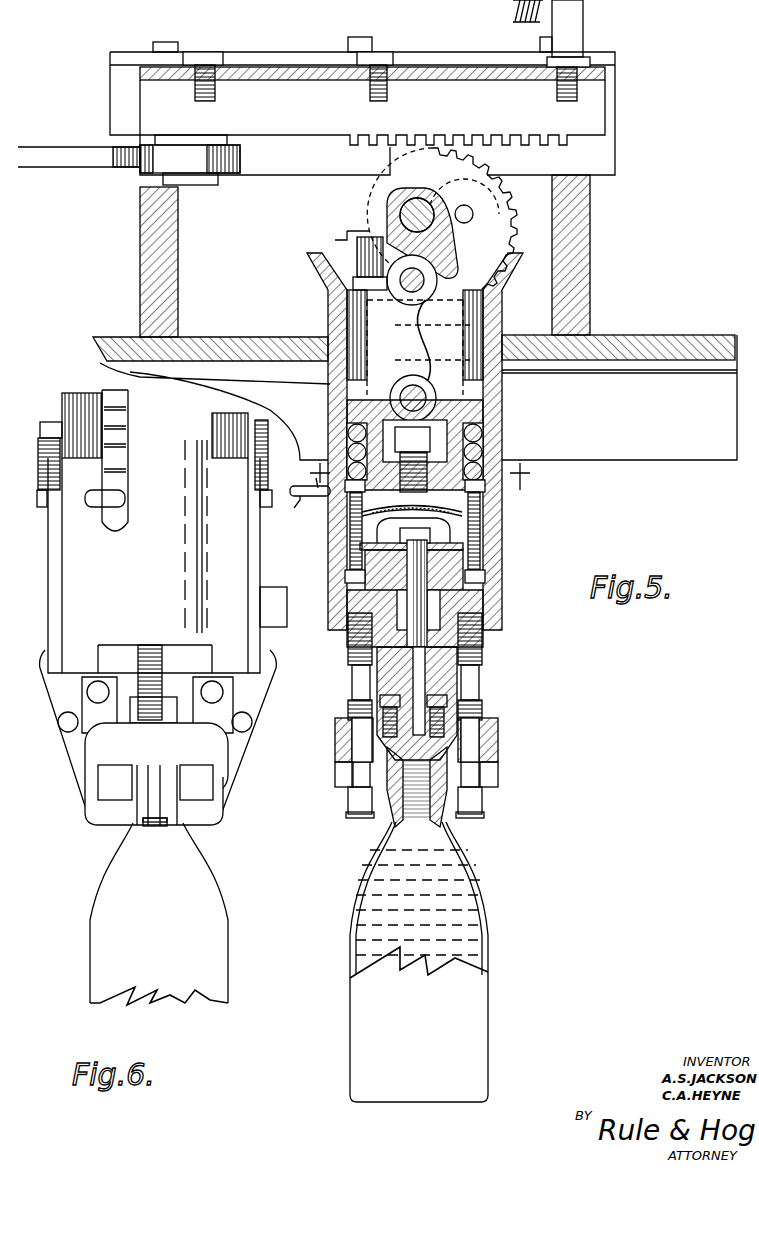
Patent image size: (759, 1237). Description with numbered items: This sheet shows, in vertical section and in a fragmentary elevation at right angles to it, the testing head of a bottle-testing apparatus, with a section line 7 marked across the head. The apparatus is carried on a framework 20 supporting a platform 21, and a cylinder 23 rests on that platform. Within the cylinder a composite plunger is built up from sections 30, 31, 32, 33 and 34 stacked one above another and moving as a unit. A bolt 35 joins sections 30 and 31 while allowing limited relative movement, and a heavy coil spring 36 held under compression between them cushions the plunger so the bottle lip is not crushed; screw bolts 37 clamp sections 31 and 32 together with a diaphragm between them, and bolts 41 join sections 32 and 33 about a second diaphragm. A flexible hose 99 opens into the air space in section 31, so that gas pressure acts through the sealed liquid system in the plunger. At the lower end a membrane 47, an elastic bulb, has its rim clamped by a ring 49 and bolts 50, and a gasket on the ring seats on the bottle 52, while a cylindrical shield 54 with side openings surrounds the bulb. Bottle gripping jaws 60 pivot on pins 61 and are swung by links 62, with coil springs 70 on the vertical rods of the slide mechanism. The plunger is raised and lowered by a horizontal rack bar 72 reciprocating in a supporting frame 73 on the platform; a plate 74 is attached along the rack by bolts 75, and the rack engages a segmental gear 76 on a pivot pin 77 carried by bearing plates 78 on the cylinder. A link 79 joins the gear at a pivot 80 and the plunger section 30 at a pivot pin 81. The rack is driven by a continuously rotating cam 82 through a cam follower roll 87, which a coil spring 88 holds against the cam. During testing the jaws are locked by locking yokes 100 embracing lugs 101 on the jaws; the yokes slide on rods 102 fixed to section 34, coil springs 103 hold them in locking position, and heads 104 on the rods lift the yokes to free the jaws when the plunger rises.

In FIG. 5, the section line 7 is at (422, 476).
In FIG. 5, the framework 20 is at (717, 462).
In FIG. 5, the platform 21 is at (700, 332).
In FIG. 5, the cylinder 23 is at (332, 410).
In FIG. 5, the plunger section 30 is at (498, 412).
In FIG. 5, the plunger section 31 is at (486, 508).
In FIG. 5, the plunger section 32 is at (490, 530).
In FIG. 5, the plunger section 33 is at (482, 555).
In FIG. 5, the plunger section 34 is at (490, 600).
In FIG. 5, the bolt 35 is at (412, 459).
In FIG. 5, the coil spring 36 is at (482, 434).
In FIG. 5, the screw bolts 37 is at (345, 526).
In FIG. 5, the bolts 41 is at (350, 560).
In FIG. 5, the membrane 47 is at (445, 825).
In FIG. 5, the ring 49 is at (380, 760).
In FIG. 5, the bolts 50 is at (450, 700).
In FIG. 5, the bottle 52 is at (488, 918).
In FIG. 6, the bottle 52 is at (205, 900).
In FIG. 5, the cylindrical shield 54 is at (392, 826).
In FIG. 6, the bottle gripping jaws 60 is at (215, 800).
In FIG. 6, the pins 61 is at (215, 690).
In FIG. 6, the links 62 is at (228, 700).
In FIG. 6, the coil springs 70 is at (250, 455).
In FIG. 5, the rack bar 72 is at (372, 112).
In FIG. 5, the supporting frame 73 is at (580, 232).
In FIG. 5, the plate 74 is at (300, 42).
In FIG. 5, the bolts 75 is at (385, 58).
In FIG. 5, the segmental gear 76 is at (462, 178).
In FIG. 5, the pivot pin 77 is at (387, 210).
In FIG. 5, the bearing plates 78 is at (345, 238).
In FIG. 5, the link 79 is at (410, 355).
In FIG. 5, the pivot 80 is at (412, 277).
In FIG. 5, the pivot pin 81 is at (424, 395).
In FIG. 5, the cam 82 is at (115, 165).
In FIG. 5, the cam follower roll 87 is at (232, 158).
In FIG. 5, the coil spring 88 is at (515, 20).
In FIG. 5, the flexible hose 99 is at (300, 508).
In FIG. 6, the flexible hose 99 is at (95, 507).
In FIG. 5, the locking yokes 100 is at (500, 745).
In FIG. 6, the locking yokes 100 is at (105, 752).
In FIG. 5, the lugs 101 is at (498, 774).
In FIG. 6, the lugs 101 is at (112, 792).
In FIG. 5, the rods 102 is at (362, 685).
In FIG. 6, the rods 102 is at (150, 826).
In FIG. 5, the coil springs 103 is at (485, 652).
In FIG. 6, the coil springs 103 is at (142, 650).
In FIG. 5, the heads 104 is at (480, 820).
In FIG. 6, the heads 104 is at (172, 824).